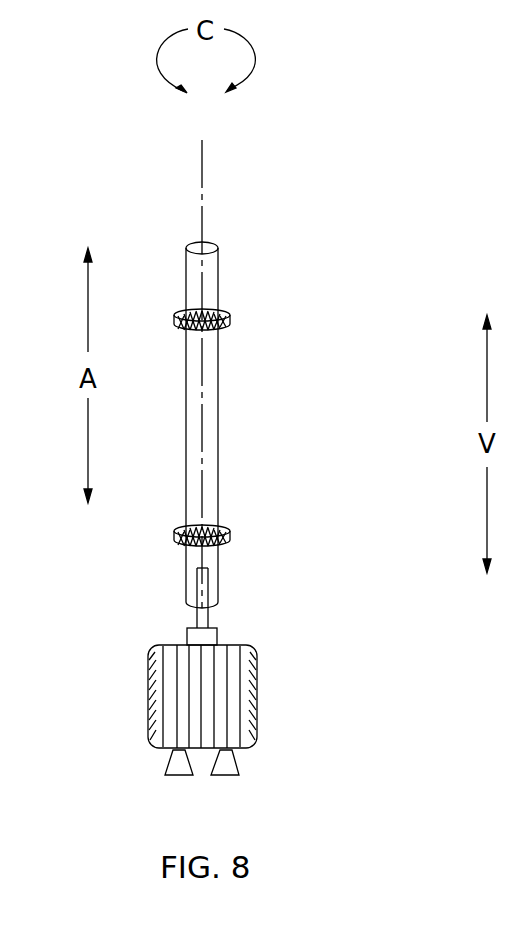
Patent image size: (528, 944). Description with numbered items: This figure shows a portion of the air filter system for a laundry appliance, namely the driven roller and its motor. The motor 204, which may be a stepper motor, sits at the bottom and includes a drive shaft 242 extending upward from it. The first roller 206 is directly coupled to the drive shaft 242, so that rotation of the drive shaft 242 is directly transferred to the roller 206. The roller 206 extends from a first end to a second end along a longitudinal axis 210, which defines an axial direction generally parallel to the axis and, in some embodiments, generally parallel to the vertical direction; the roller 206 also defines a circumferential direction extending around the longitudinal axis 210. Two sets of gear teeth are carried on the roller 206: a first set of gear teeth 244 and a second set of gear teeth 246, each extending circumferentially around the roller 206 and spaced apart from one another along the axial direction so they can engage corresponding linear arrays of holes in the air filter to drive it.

The motor 204 is at (243, 705).
The first roller 206 is at (213, 590).
The longitudinal axis 210 is at (202, 181).
The drive shaft 242 is at (195, 617).
The first set of gear teeth 244 is at (230, 323).
The second set of gear teeth 246 is at (230, 537).